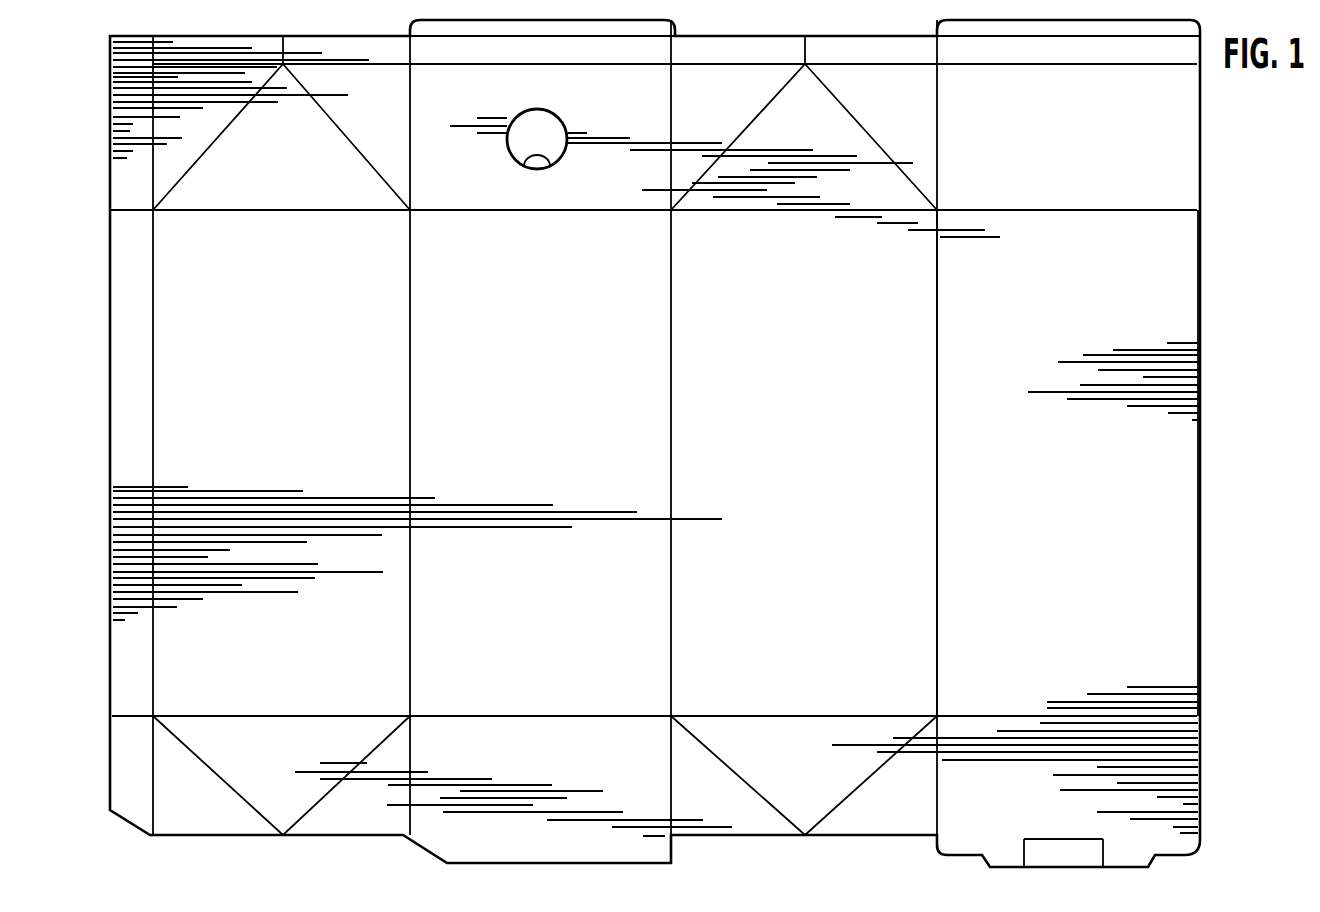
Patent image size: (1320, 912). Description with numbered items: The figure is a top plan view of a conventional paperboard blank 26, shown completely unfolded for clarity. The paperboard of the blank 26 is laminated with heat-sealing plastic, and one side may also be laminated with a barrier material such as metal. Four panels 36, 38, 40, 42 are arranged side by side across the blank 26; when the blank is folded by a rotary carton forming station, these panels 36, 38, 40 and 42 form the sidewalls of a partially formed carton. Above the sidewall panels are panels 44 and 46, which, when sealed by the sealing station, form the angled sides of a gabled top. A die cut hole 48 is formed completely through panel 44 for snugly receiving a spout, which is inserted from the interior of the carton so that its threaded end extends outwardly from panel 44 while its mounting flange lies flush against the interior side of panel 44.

The paperboard blank 26 is at (1183, 258).
The panel 36 is at (281, 357).
The panel 38 is at (547, 362).
The panel 40 is at (809, 359).
The panel 42 is at (1082, 354).
The panel 44 is at (455, 109).
The panel 46 is at (1089, 155).
The die cut hole 48 is at (549, 163).